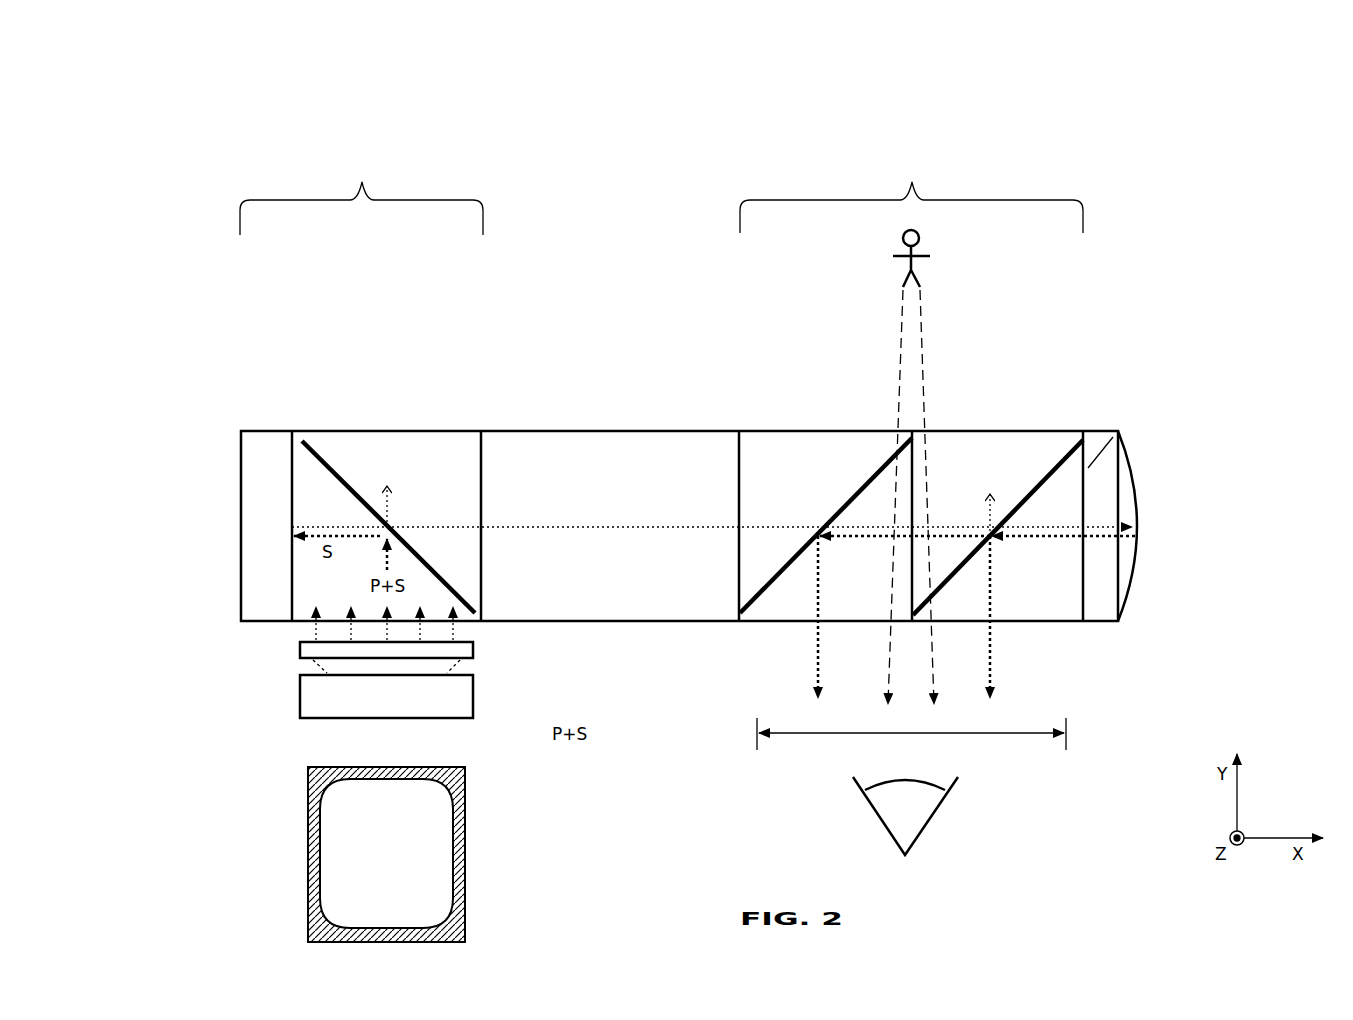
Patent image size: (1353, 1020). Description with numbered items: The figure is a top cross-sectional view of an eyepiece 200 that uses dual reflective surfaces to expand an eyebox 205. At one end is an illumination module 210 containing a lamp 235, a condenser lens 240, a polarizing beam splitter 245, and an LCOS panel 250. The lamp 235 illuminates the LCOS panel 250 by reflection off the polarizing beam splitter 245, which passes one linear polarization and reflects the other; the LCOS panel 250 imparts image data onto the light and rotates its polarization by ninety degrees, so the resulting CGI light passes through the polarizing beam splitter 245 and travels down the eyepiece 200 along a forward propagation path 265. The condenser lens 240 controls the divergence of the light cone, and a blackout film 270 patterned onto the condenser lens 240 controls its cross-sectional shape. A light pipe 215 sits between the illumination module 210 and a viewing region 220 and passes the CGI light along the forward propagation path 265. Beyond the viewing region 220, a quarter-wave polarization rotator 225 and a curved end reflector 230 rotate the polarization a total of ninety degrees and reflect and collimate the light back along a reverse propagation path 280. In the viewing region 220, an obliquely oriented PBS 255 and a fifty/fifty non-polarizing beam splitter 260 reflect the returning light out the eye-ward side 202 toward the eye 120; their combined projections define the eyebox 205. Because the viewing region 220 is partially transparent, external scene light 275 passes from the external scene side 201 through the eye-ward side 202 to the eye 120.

The eyepiece 200 is at (260, 120).
The external scene side 201 is at (684, 355).
The eye-ward side 202 is at (678, 696).
The eyebox 205 is at (982, 733).
The illumination module 210 is at (367, 195).
The light pipe 215 is at (513, 432).
The viewing region 220 is at (911, 191).
The polarization rotator 225 is at (1107, 432).
The end reflector 230 is at (1137, 513).
The lamp 235 is at (386, 696).
The condenser lens 240 is at (270, 834).
The polarizing beam splitter 245 is at (305, 445).
The LCOS panel 250 is at (258, 430).
The PBS 255 is at (883, 463).
The non-polarizing beam splitter 260 is at (1080, 442).
The forward propagation path 265 is at (572, 527).
The blackout film 270 is at (455, 928).
The external scene light 275 is at (925, 358).
The reverse propagation path 280 is at (1023, 537).
The eye 120 is at (905, 816).